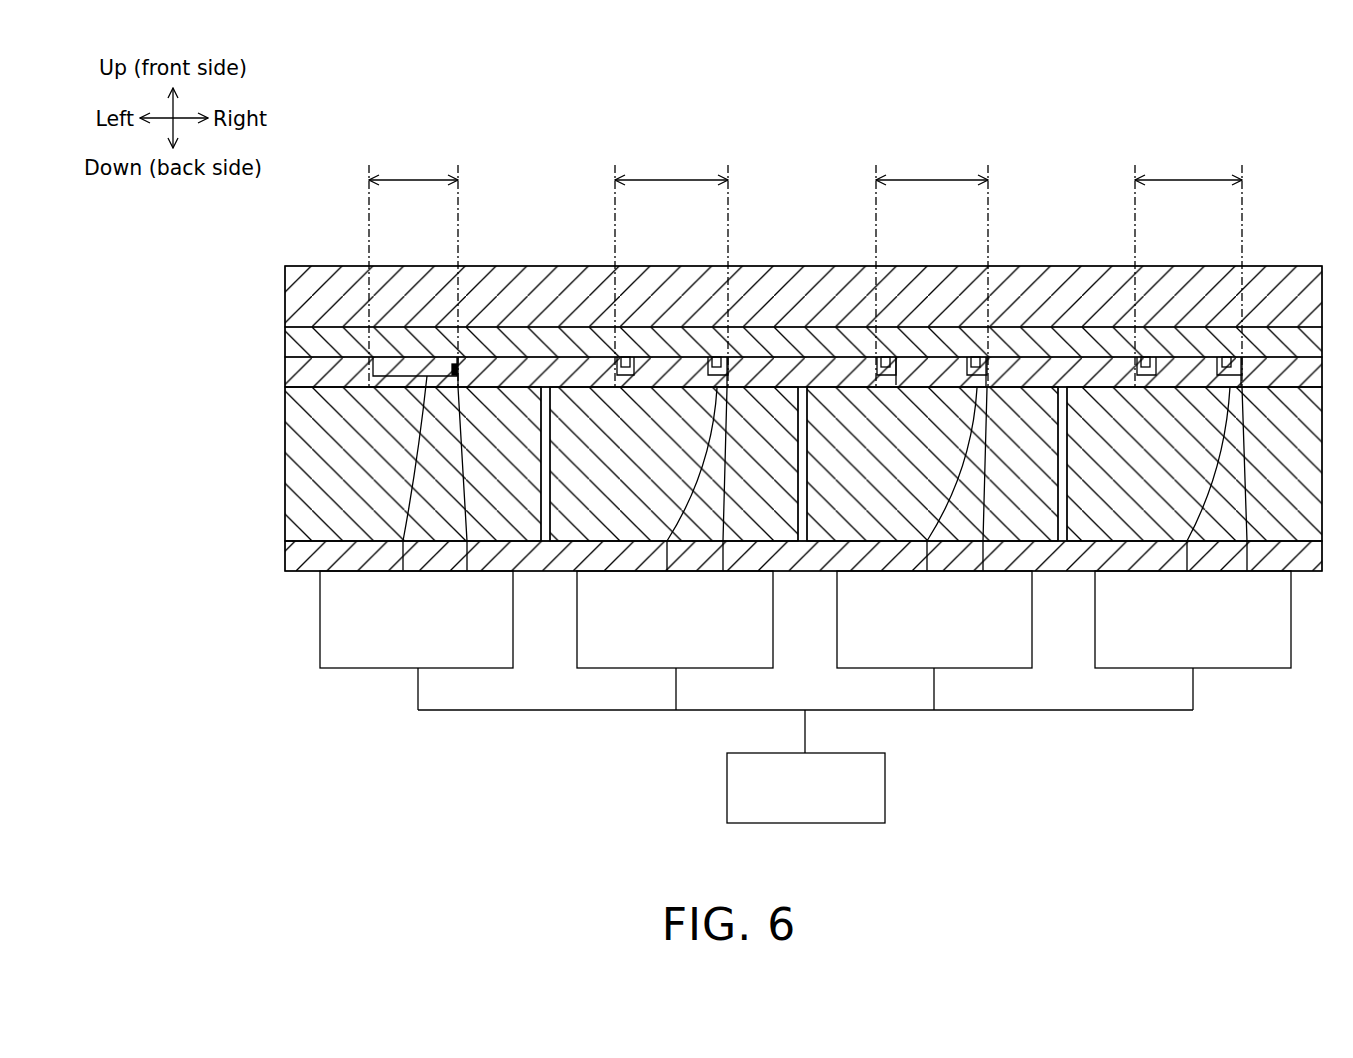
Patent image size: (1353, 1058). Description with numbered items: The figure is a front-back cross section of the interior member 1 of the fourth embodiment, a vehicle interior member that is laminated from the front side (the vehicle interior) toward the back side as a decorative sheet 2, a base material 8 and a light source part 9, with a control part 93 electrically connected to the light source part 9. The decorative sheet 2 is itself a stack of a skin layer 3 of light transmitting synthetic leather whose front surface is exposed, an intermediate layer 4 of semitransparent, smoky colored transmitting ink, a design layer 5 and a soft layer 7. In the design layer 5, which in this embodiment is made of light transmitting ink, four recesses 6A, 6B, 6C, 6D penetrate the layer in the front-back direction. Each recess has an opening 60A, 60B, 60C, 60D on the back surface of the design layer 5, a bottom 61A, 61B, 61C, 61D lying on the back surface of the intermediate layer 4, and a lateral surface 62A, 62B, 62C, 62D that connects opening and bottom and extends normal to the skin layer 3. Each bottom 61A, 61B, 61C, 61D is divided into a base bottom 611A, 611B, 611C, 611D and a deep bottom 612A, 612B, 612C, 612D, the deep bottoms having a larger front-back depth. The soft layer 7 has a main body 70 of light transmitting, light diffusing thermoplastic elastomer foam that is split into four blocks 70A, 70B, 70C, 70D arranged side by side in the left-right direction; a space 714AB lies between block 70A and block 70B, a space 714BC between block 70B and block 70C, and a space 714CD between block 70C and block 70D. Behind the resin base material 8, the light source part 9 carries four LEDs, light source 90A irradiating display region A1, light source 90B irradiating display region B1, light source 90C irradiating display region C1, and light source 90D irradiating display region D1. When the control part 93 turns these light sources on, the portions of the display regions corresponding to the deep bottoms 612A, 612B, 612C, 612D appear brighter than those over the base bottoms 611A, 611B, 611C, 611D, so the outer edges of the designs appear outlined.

The interior member 1 is at (1228, 110).
The decorative sheet 2 is at (285, 541).
The skin layer 3 is at (285, 327).
The intermediate layer 4 is at (285, 357).
The design layer 5 is at (285, 387).
The soft layer 7 is at (221, 541).
The base material 8 is at (320, 571).
The light source part 9 is at (320, 668).
The recess 6A is at (413, 378).
The recess 6B is at (641, 378).
The recess 6C is at (900, 378).
The recess 6D is at (1155, 378).
The opening 60A is at (403, 389).
The opening 60B is at (712, 418).
The opening 60C is at (972, 418).
The opening 60D is at (1230, 418).
The lateral surface 62A is at (380, 377).
The lateral surface 62B is at (626, 377).
The lateral surface 62C is at (886, 377).
The lateral surface 62D is at (1146, 377).
The main body 70 is at (388, 500).
The block 70A is at (355, 540).
The block 70B is at (620, 540).
The block 70C is at (880, 540).
The block 70D is at (1135, 540).
The bottom 61A is at (442, 509).
The bottom 61B is at (701, 515).
The bottom 61C is at (959, 515).
The bottom 61D is at (1218, 514).
The base bottom 611A is at (415, 473).
The deep bottom 612A is at (462, 479).
The base bottom 611B is at (692, 479).
The deep bottom 612B is at (725, 479).
The base bottom 611C is at (952, 479).
The deep bottom 612C is at (985, 479).
The base bottom 611D is at (1208, 479).
The deep bottom 612D is at (1244, 479).
The light source 90A is at (378, 665).
The light source 90B is at (636, 665).
The light source 90C is at (896, 665).
The light source 90D is at (1153, 665).
The control part 93 is at (885, 772).
The space 714AB is at (548, 387).
The space 714BC is at (808, 387).
The space 714CD is at (1067, 387).
The display region A1 is at (415, 177).
The display region B1 is at (675, 177).
The display region C1 is at (935, 177).
The display region D1 is at (1192, 177).